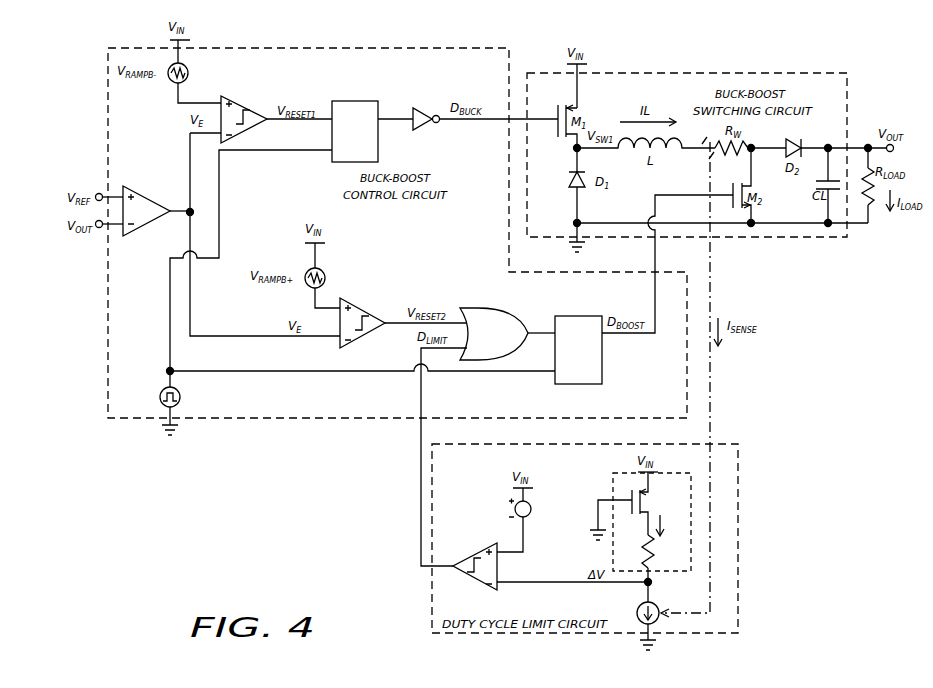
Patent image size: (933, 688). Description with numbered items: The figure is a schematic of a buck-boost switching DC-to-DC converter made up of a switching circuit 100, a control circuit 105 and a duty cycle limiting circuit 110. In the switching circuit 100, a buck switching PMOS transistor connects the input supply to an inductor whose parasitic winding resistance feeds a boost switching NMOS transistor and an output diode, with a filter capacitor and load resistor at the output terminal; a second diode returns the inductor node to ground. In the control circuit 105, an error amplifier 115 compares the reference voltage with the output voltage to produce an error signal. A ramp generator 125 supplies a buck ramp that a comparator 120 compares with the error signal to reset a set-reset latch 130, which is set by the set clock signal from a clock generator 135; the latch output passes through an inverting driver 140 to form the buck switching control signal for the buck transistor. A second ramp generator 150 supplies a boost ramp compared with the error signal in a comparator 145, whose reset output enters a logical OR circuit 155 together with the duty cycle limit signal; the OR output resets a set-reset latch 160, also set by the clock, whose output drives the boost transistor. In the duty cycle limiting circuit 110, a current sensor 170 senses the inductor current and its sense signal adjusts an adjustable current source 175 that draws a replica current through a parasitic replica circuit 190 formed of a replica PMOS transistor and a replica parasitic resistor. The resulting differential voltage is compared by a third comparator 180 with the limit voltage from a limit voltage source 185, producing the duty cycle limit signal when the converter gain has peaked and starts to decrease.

The switching circuit 100 is at (726, 73).
The control circuit 105 is at (280, 48).
The duty cycle limiting circuit 110 is at (738, 520).
The error amplifier 115 is at (142, 228).
The comparator 120 is at (245, 98).
The ramp generator 125 is at (171, 81).
The set-reset latch 130 is at (353, 101).
The clock generator 135 is at (160, 397).
The inverting driver 140 is at (428, 110).
The comparator 145 is at (366, 304).
The ramp generator 150 is at (307, 286).
The logical OR circuit 155 is at (500, 310).
The set-reset latch 160 is at (573, 316).
The current sensor 170 is at (704, 153).
The adjustable current source 175 is at (637, 613).
The third comparator 180 is at (476, 551).
The limit voltage source 185 is at (531, 509).
The parasitic replica circuit 190 is at (613, 478).